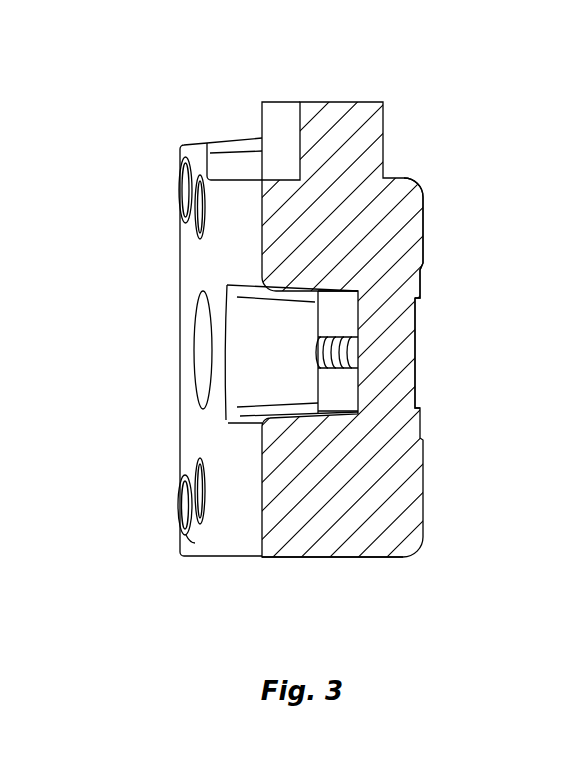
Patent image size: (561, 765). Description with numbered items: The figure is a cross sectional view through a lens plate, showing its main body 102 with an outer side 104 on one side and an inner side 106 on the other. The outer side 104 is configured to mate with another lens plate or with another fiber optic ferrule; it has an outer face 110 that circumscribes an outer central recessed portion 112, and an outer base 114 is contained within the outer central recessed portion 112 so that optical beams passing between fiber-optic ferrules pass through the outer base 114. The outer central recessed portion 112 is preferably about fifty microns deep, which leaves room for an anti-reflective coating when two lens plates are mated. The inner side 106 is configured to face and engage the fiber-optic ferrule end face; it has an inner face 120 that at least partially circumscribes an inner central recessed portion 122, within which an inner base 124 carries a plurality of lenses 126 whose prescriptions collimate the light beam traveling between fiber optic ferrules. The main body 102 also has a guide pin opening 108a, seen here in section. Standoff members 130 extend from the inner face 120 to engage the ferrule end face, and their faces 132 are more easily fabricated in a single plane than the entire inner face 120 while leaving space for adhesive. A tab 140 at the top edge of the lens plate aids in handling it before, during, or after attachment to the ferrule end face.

The main body 102 is at (395, 562).
The outer side 104 is at (434, 477).
The inner side 106 is at (162, 422).
The guide pin opening 108a is at (193, 350).
The outer face 110 is at (423, 232).
The outer central recessed portion 112 is at (420, 285).
The outer base 114 is at (415, 387).
The inner face 120 is at (192, 270).
The inner central recessed portion 122 is at (303, 394).
The inner base 124 is at (359, 321).
The plurality of lenses 126 is at (355, 353).
The standoff members 130 is at (186, 146).
The faces 132 is at (180, 193).
The tab 140 is at (347, 102).